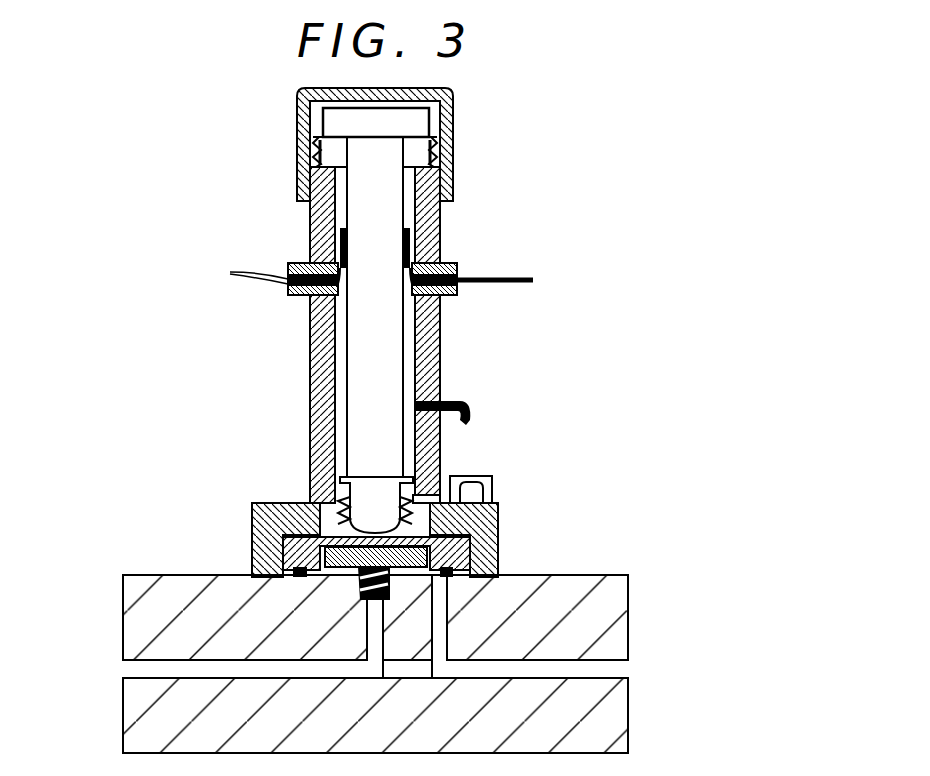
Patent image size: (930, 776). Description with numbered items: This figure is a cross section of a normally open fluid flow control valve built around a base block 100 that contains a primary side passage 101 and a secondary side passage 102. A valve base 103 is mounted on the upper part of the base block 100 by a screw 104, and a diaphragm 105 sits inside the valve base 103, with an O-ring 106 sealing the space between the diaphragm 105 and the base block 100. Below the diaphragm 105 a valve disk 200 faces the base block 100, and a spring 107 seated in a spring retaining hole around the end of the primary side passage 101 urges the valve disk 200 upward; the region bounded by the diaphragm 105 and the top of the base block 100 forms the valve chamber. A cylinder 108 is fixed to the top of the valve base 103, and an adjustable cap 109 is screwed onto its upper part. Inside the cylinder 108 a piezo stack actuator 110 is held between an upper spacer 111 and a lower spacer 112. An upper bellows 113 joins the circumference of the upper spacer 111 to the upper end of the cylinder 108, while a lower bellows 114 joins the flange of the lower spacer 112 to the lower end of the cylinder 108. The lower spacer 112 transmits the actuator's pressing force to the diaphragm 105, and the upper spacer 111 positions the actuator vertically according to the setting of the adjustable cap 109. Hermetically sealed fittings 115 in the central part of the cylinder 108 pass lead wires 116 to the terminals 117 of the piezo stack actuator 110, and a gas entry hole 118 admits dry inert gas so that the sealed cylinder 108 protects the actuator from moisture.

The base block 100 is at (620, 608).
The primary side passage 101 is at (123, 669).
The secondary side passage 102 is at (628, 670).
The valve base 103 is at (300, 503).
The screw 104 is at (496, 482).
The diaphragm 105 is at (252, 530).
The O-ring 106 is at (252, 566).
The spring 107 is at (386, 592).
The cylinder 108 is at (443, 338).
The adjustable cap 109 is at (455, 100).
The piezo stack actuator 110 is at (360, 353).
The upper spacer 111 is at (330, 115).
The lower spacer 112 is at (310, 460).
The upper bellows 113 is at (453, 143).
The lower bellows 114 is at (440, 470).
The hermetically sealed fittings 115 is at (455, 263).
The lead wires 116 is at (262, 274).
The terminals 117 is at (443, 228).
The gas entry hole 118 is at (465, 395).
The valve disk 200 is at (498, 528).